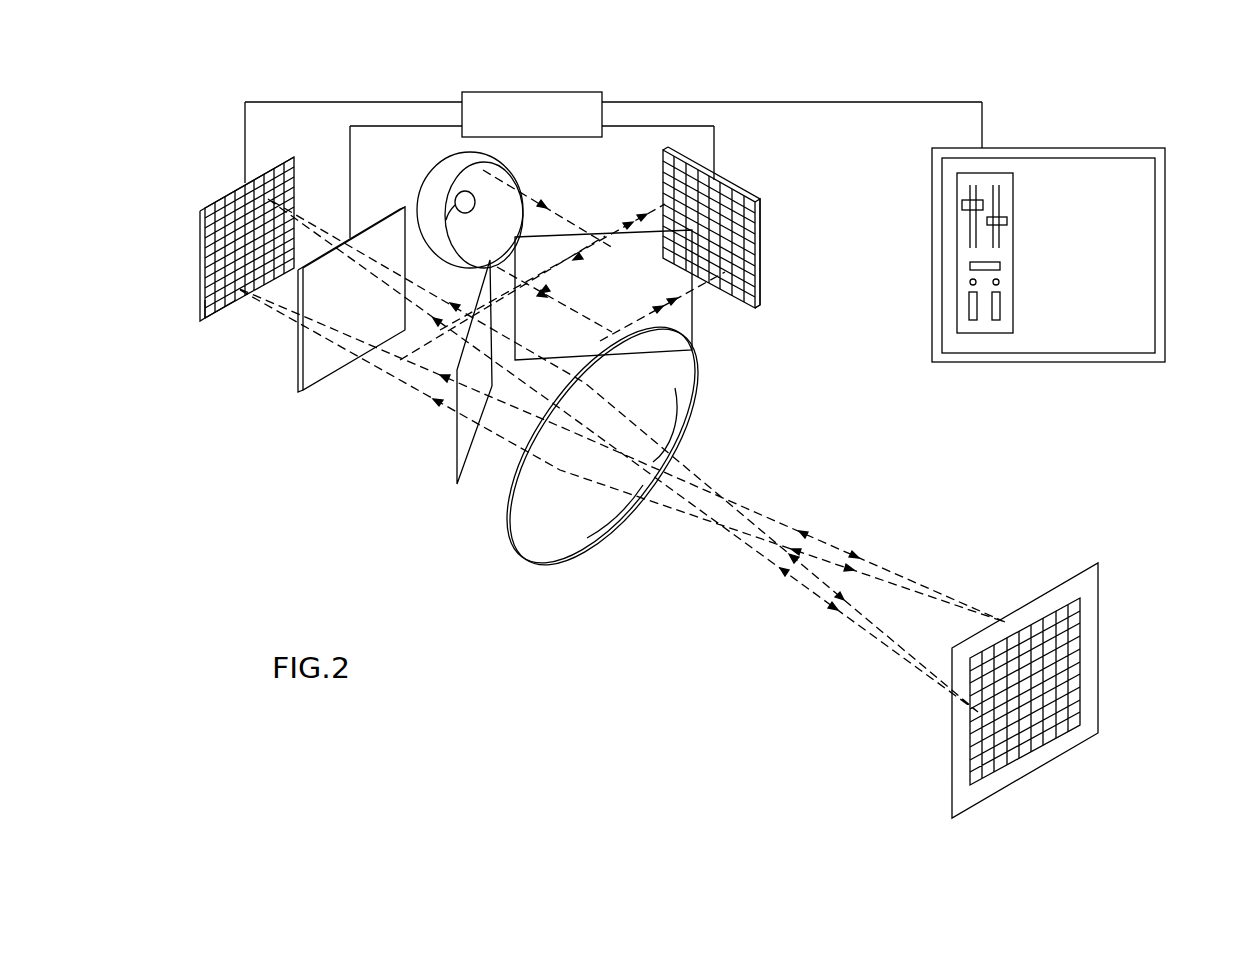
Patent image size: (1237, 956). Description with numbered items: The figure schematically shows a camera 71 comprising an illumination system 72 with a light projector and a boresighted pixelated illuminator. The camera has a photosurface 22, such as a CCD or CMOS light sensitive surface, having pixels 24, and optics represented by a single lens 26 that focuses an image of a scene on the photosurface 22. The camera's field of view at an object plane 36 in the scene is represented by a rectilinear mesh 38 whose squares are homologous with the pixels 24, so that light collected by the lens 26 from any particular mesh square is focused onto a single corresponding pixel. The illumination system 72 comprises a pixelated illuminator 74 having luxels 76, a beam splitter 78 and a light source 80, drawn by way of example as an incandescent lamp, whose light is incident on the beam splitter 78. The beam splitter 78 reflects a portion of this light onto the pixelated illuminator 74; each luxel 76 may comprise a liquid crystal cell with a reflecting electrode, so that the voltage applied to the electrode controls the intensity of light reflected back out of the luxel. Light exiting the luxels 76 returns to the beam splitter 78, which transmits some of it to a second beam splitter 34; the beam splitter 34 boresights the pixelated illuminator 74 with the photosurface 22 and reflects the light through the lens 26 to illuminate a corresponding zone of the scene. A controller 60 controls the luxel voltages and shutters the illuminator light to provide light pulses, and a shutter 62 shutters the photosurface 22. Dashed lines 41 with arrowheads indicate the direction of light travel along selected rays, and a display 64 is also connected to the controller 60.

The photosurface 22 is at (271, 177).
The pixels 24 is at (228, 310).
The lens 26 is at (568, 524).
The beam splitter 34 is at (476, 452).
The object plane 36 is at (1077, 575).
The rectilinear mesh 38 is at (1083, 600).
The dashed lines 41 is at (589, 248).
The controller 60 is at (585, 92).
The shutter 62 is at (310, 382).
The display 64 is at (1172, 162).
The camera 71 is at (1125, 92).
The illumination system 72 is at (792, 373).
The pixelated illuminator 74 is at (745, 193).
The luxels 76 is at (722, 203).
The beam splitter 78 is at (689, 328).
The light source 80 is at (448, 170).